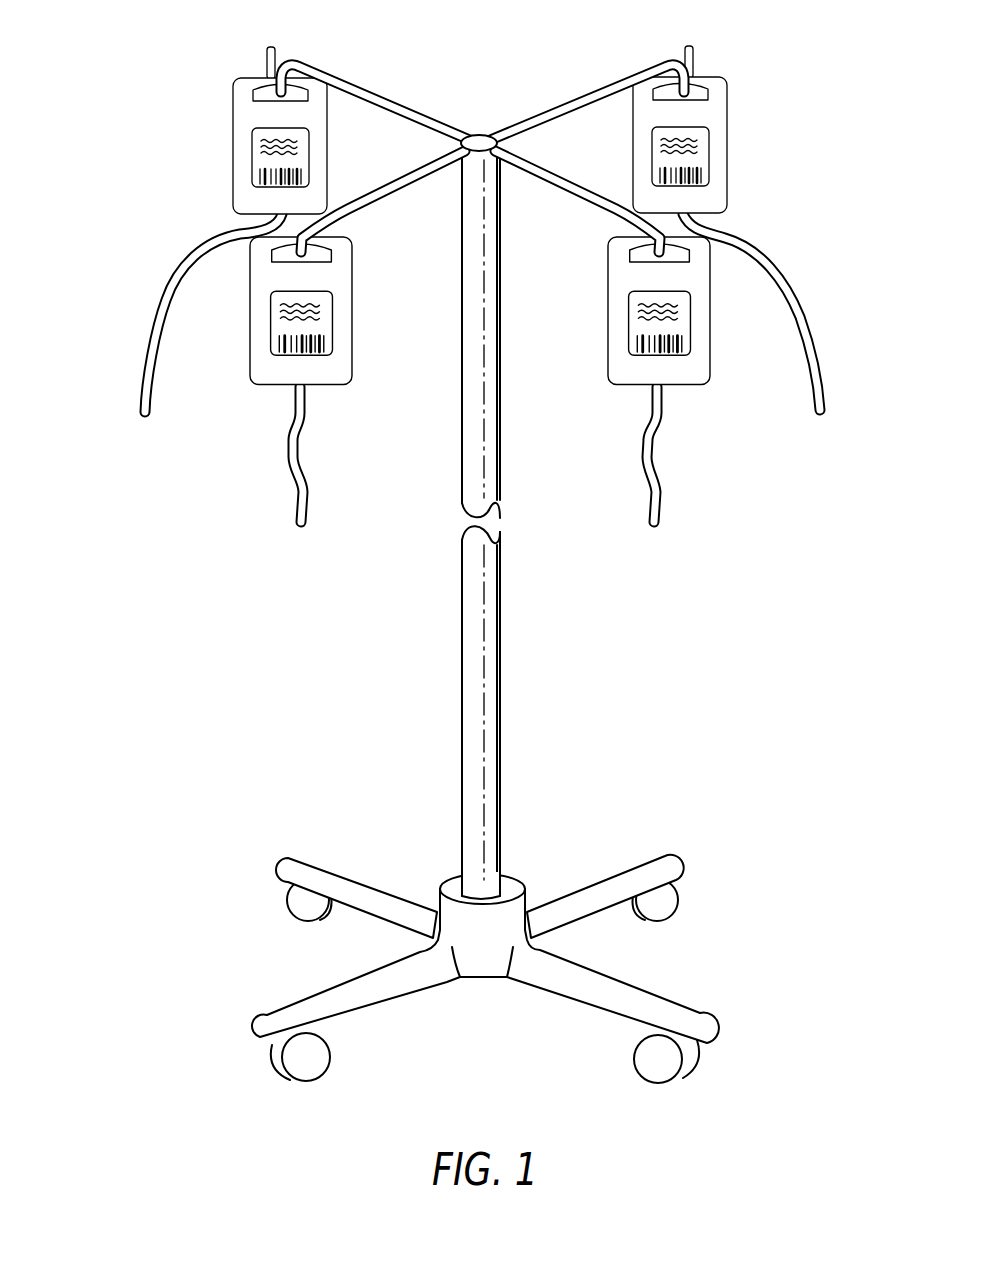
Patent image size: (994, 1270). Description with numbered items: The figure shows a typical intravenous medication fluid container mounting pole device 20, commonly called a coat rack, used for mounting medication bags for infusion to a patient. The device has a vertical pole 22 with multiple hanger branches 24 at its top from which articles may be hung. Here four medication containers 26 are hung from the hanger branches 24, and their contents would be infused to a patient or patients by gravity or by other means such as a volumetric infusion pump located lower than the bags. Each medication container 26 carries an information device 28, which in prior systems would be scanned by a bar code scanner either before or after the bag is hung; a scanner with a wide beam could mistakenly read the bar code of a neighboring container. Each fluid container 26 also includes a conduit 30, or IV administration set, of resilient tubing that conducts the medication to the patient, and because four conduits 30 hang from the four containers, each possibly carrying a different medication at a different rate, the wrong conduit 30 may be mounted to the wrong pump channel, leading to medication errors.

The intravenous medication fluid container mounting pole device 20 is at (482, 549).
The vertical pole 22 is at (492, 633).
The hanger branches 24 is at (407, 107).
The medication containers 26 is at (233, 120).
The information devices 28 is at (252, 158).
The conduit 30 is at (163, 312).